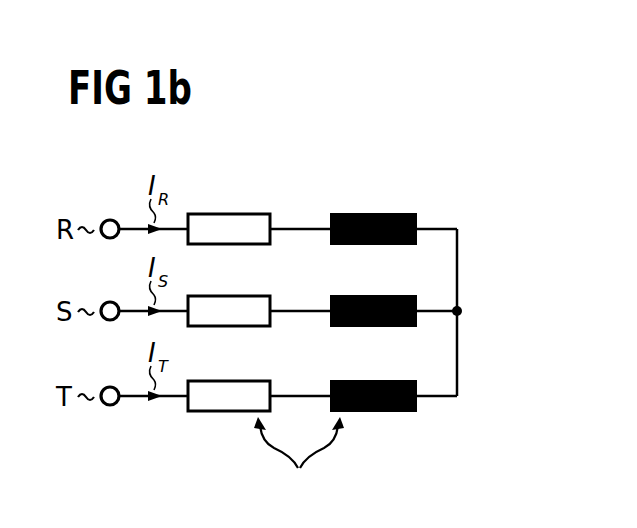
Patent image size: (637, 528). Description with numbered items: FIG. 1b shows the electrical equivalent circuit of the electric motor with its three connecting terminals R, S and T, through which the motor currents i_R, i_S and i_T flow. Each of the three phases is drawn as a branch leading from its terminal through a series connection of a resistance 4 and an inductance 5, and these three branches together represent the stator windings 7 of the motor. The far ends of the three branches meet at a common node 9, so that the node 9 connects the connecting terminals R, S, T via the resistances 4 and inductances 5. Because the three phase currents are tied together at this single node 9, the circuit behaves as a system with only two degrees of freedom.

The resistance 4 is at (226, 213).
The inductance 5 is at (372, 213).
The stator windings 7 is at (299, 464).
The node 9 is at (461, 314).